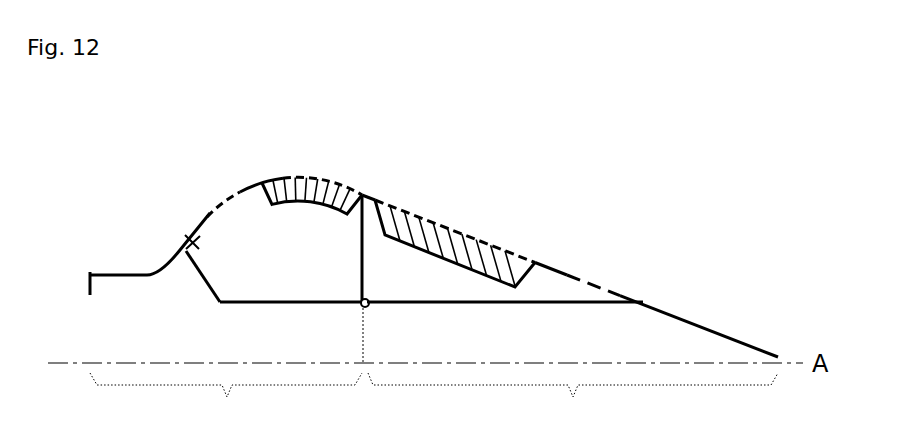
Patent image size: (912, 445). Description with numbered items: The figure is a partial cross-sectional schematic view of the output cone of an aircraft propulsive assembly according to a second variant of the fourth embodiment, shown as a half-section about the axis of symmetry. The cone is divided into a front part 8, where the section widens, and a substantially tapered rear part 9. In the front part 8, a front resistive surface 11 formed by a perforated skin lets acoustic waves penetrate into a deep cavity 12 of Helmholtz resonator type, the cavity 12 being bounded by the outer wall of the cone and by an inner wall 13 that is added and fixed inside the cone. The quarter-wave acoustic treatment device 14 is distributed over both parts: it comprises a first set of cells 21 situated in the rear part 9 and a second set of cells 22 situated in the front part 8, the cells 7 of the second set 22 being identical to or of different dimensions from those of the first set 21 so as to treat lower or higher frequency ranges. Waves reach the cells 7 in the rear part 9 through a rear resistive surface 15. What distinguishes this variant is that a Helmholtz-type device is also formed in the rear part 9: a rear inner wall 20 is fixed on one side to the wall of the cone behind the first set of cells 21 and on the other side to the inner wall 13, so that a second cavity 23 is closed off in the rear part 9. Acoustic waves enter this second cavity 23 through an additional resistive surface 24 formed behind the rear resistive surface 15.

The cells 7 is at (345, 195).
The front part 8 is at (226, 403).
The rear part 9 is at (573, 403).
The front resistive surface 11 is at (229, 194).
The cavity 12 is at (222, 232).
The inner wall 13 is at (255, 303).
The quarter-wave acoustic treatment device 14 is at (306, 222).
The rear resistive surface 15 is at (506, 242).
The rear inner wall 20 is at (538, 303).
The first set of cells 21 is at (420, 227).
The second set of cells 22 is at (297, 179).
The second cavity 23 is at (448, 283).
The additional resistive surface 24 is at (592, 282).